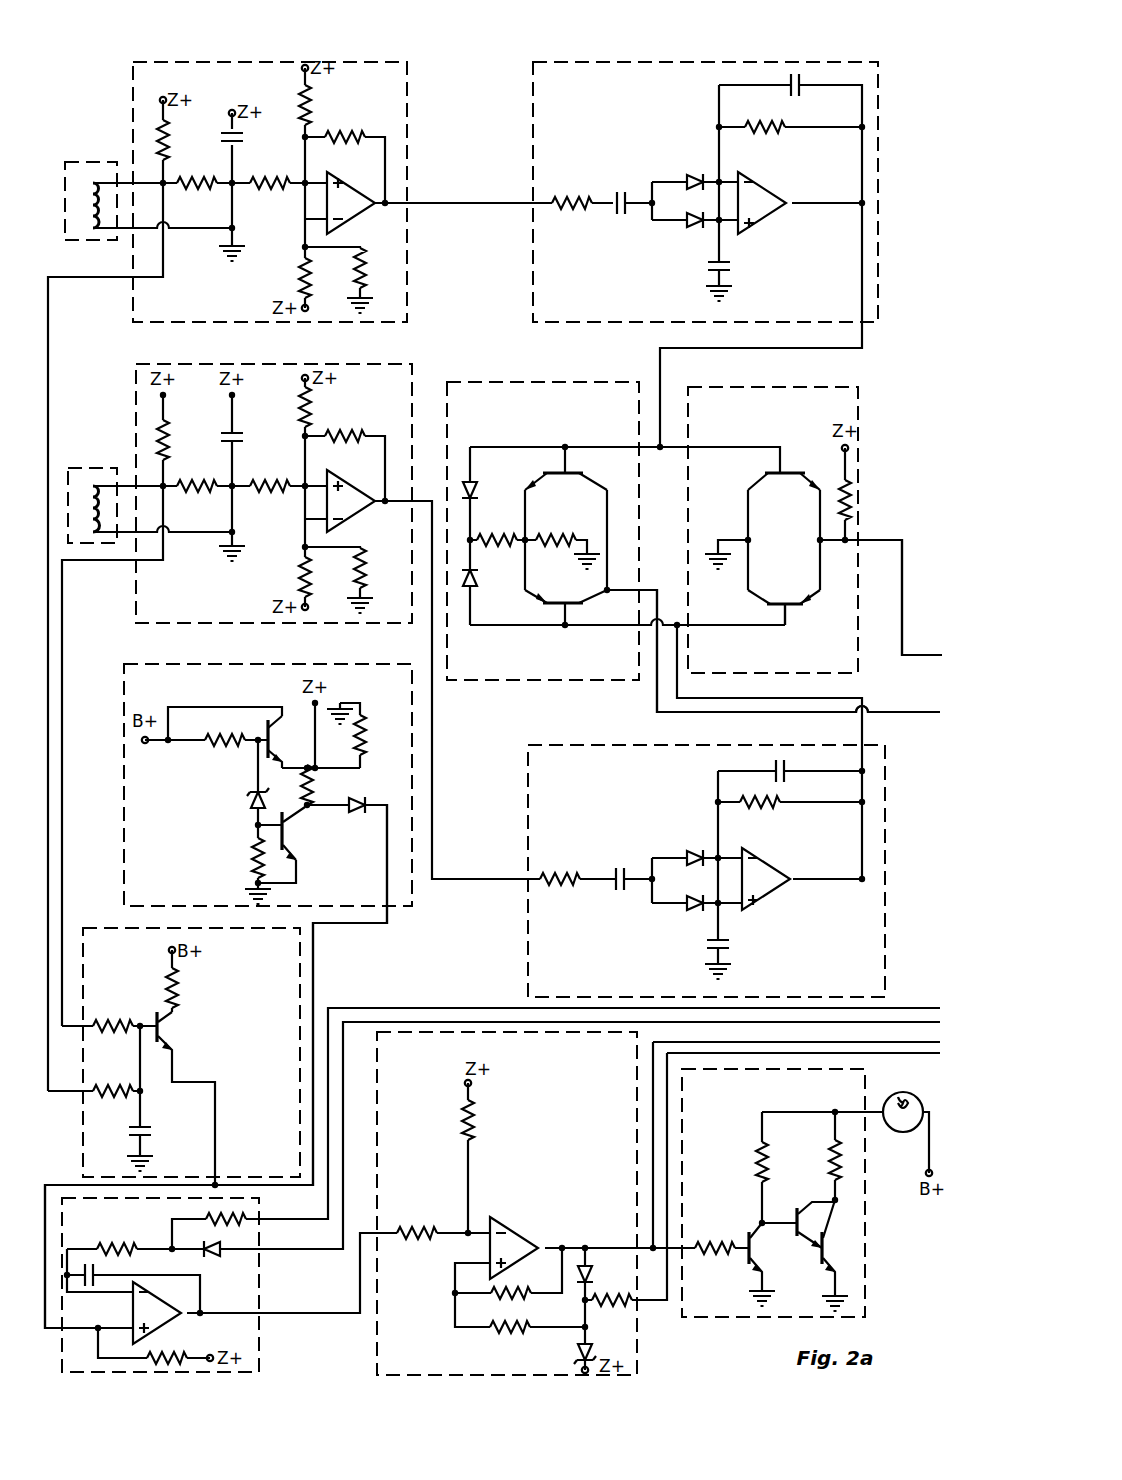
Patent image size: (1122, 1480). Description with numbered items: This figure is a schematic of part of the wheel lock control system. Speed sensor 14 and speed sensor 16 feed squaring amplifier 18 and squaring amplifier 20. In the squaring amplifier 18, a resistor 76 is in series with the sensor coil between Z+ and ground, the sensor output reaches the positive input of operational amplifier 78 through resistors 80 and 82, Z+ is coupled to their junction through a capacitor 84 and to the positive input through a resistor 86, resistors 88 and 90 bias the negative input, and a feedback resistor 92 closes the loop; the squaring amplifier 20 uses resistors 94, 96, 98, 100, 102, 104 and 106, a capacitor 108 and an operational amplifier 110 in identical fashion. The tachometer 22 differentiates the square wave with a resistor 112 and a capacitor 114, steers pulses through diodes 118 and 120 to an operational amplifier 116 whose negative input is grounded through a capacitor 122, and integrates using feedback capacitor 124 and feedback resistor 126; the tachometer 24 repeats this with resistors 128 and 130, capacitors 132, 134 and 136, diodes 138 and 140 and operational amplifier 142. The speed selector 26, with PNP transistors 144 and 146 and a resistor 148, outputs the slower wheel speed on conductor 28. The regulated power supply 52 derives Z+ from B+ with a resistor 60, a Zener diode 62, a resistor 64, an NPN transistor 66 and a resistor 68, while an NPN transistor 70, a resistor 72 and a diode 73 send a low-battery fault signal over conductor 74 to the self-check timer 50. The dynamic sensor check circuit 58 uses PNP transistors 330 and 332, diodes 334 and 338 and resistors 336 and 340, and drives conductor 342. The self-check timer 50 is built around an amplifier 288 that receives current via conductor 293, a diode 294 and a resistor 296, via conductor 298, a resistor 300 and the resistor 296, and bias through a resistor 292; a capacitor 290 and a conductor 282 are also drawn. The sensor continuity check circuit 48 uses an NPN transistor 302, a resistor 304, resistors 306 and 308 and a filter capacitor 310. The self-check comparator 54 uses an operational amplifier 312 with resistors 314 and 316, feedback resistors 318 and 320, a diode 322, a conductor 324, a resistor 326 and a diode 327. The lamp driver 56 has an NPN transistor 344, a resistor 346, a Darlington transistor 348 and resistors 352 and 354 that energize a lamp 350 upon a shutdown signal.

The speed sensor 14 is at (90, 162).
The speed sensor 16 is at (85, 468).
The squaring amplifier 18 is at (236, 62).
The squaring amplifier 20 is at (290, 364).
The tachometer 22 is at (712, 62).
The tachometer 24 is at (526, 788).
The speed selector 26 is at (843, 390).
The conductor 28 is at (932, 652).
The sensor continuity check circuit 48 is at (93, 928).
The self-check timer 50 is at (260, 1290).
The regulated power supply 52 is at (414, 736).
The self-check comparator 54 is at (377, 1330).
The lamp driver 56 is at (866, 1212).
The dynamic sensor check circuit 58 is at (478, 382).
The resistor 60 is at (222, 746).
The Zener diode 62 is at (250, 804).
The resistor 64 is at (252, 858).
The NPN transistor 66 is at (272, 720).
The resistor 68 is at (364, 740).
The NPN transistor 70 is at (288, 846).
The resistor 72 is at (312, 788).
The diode 73 is at (357, 814).
The conductor 74 is at (350, 927).
The resistor 76 is at (167, 145).
The operational amplifier 78 is at (368, 194).
The resistor 80 is at (200, 188).
The resistor 82 is at (272, 188).
The capacitor 84 is at (238, 140).
The resistor 86 is at (309, 102).
The resistor 88 is at (302, 280).
The resistor 90 is at (364, 272).
The feedback resistor 92 is at (345, 134).
The resistor 94 is at (167, 442).
The resistor 96 is at (200, 491).
The resistor 98 is at (273, 491).
The resistor 100 is at (310, 405).
The resistor 102 is at (302, 578).
The resistor 104 is at (365, 568).
The resistor 106 is at (348, 432).
The capacitor 108 is at (238, 437).
The operational amplifier 110 is at (350, 488).
The resistor 112 is at (572, 197).
The capacitor 114 is at (617, 212).
The operational amplifier 116 is at (770, 196).
The diode 118 is at (692, 228).
The diode 120 is at (693, 176).
The capacitor 122 is at (727, 266).
The feedback capacitor 124 is at (800, 80).
The feedback resistor 126 is at (770, 125).
The resistor 128 is at (562, 873).
The resistor 130 is at (745, 800).
The capacitor 132 is at (617, 888).
The capacitor 134 is at (726, 944).
The capacitor 136 is at (786, 770).
The diode 138 is at (694, 851).
The diode 140 is at (692, 910).
The operational amplifier 142 is at (772, 892).
The PNP transistor 144 is at (783, 486).
The PNP transistor 146 is at (792, 608).
The resistor 148 is at (850, 510).
The signal line 282 is at (915, 1040).
The amplifier 288 is at (172, 1307).
The capacitor 290 is at (96, 1272).
The resistor 292 is at (172, 1356).
The conductor 293 is at (798, 1008).
The diode 294 is at (222, 1248).
The resistor 296 is at (118, 1244).
The conductor 298 is at (860, 1022).
The resistor 300 is at (232, 1217).
The NPN transistor 302 is at (162, 1028).
The resistor 304 is at (177, 985).
The resistor 306 is at (116, 1021).
The resistor 308 is at (116, 1086).
The filter capacitor 310 is at (148, 1132).
The operational amplifier 312 is at (522, 1236).
The resistor 314 is at (418, 1228).
The resistor 316 is at (472, 1120).
The first feedback resistor 318 is at (506, 1290).
The second feedback resistor 320 is at (507, 1333).
The diode 322 is at (590, 1264).
The conductor 324 is at (818, 1053).
The resistor 326 is at (620, 1306).
The diode 327 is at (577, 1354).
The PNP transistor 330 is at (568, 468).
The PNP transistor 332 is at (584, 604).
The diode 334 is at (476, 488).
The resistor 336 is at (498, 536).
The diode 338 is at (474, 578).
The resistor 340 is at (557, 536).
The conductor 342 is at (928, 716).
The NPN transistor 344 is at (746, 1256).
The resistor 346 is at (716, 1244).
The Darlington transistor 348 is at (822, 1262).
The lamp 350 is at (916, 1098).
The resistor 352 is at (758, 1166).
The resistor 354 is at (830, 1166).